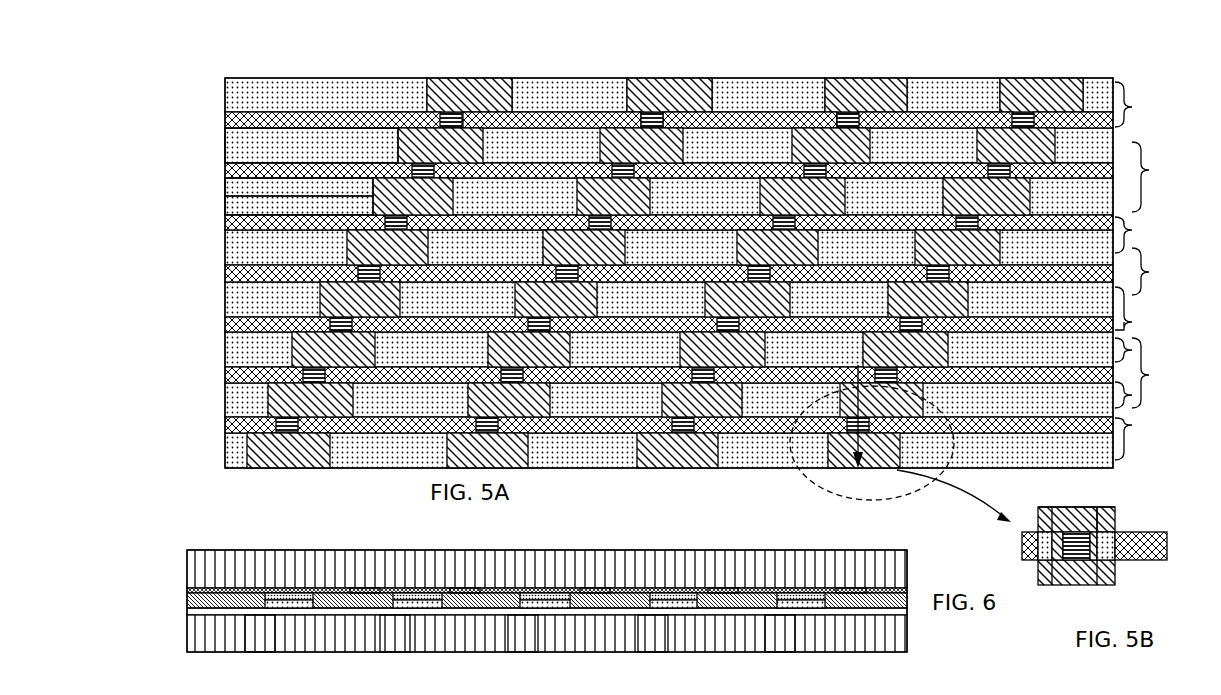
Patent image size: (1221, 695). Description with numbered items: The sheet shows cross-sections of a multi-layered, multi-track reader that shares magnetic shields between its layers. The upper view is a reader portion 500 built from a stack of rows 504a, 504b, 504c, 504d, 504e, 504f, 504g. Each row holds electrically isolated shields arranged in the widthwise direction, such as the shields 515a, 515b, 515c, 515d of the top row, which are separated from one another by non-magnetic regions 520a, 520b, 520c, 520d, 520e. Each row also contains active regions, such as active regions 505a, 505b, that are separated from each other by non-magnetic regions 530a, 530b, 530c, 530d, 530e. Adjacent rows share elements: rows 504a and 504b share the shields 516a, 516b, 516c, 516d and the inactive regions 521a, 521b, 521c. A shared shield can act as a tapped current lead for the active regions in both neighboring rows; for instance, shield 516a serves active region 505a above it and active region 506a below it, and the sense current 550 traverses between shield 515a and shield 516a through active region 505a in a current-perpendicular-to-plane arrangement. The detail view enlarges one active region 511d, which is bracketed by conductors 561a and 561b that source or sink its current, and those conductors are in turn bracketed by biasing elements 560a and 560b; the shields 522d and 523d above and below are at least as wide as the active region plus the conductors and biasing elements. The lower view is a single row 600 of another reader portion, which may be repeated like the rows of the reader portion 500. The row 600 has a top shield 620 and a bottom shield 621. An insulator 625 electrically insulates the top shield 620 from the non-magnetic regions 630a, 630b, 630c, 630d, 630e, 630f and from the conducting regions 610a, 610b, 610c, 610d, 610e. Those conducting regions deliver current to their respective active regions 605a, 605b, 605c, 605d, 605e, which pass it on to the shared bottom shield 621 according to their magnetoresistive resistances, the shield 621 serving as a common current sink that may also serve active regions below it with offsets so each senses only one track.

In FIG. 5A, the reader portion 500 is at (259, 68).
In FIG. 5A, the row 504a is at (1145, 104).
In FIG. 5A, the row 504b is at (1159, 177).
In FIG. 5A, the row 504c is at (1144, 235).
In FIG. 5A, the row 504d is at (1158, 271).
In FIG. 5A, the row 504e is at (1149, 310).
In FIG. 5A, the row 504f is at (1161, 373).
In FIG. 5A, the row 504g is at (1143, 439).
In FIG. 5A, the active region 505a is at (463, 110).
In FIG. 5A, the active region 505b is at (645, 112).
In FIG. 5A, the active region 506a is at (413, 167).
In FIG. 5B, the active region 511d is at (1078, 560).
In FIG. 5A, the shield 515a is at (436, 78).
In FIG. 5A, the shield 515b is at (652, 110).
In FIG. 5A, the shield 515c is at (883, 110).
In FIG. 5A, the shield 515d is at (1068, 110).
In FIG. 5A, the shared shield 516a is at (400, 145).
In FIG. 5A, the shared shield 516b is at (219, 195).
In FIG. 5A, the shared shield 516c is at (870, 137).
In FIG. 5A, the shared shield 516d is at (1012, 112).
In FIG. 5A, the non-magnetic region 520a is at (300, 78).
In FIG. 5A, the non-magnetic region 520b is at (596, 78).
In FIG. 5A, the non-magnetic region 520c is at (792, 79).
In FIG. 5A, the non-magnetic region 520d is at (948, 80).
In FIG. 5A, the non-magnetic region 520e is at (1092, 80).
In FIG. 5A, the inactive region 521a is at (226, 134).
In FIG. 5A, the inactive region 521b is at (226, 194).
In FIG. 5A, the inactive region 521c is at (377, 205).
In FIG. 5B, the shield 522d is at (1115, 518).
In FIG. 5B, the shield 523d is at (1115, 577).
In FIG. 5A, the non-magnetic region 530a is at (226, 121).
In FIG. 5A, the non-magnetic region 530b is at (530, 112).
In FIG. 5A, the non-magnetic region 530c is at (752, 112).
In FIG. 5A, the non-magnetic region 530d is at (887, 113).
In FIG. 5A, the non-magnetic region 530e is at (1063, 110).
In FIG. 5A, the sense current 550 is at (840, 433).
In FIG. 5B, the biasing element 560a is at (1046, 530).
In FIG. 5B, the biasing element 560b is at (1093, 572).
In FIG. 5B, the conductor 561a is at (1055, 525).
In FIG. 5B, the conductor 561b is at (1095, 523).
In FIG. 6, the row 600 is at (293, 536).
In FIG. 6, the active region 605a is at (287, 603).
In FIG. 6, the active region 605b is at (423, 610).
In FIG. 6, the active region 605c is at (547, 610).
In FIG. 6, the active region 605d is at (677, 610).
In FIG. 6, the active region 605e is at (805, 610).
In FIG. 6, the conducting region 610a is at (262, 615).
In FIG. 6, the conducting region 610b is at (397, 615).
In FIG. 6, the conducting region 610c is at (525, 615).
In FIG. 6, the conducting region 610d is at (653, 615).
In FIG. 6, the conducting region 610e is at (782, 615).
In FIG. 6, the top shield 620 is at (187, 571).
In FIG. 6, the bottom shield 621 is at (187, 640).
In FIG. 6, the insulator 625 is at (187, 591).
In FIG. 6, the non-magnetic region 630a is at (187, 616).
In FIG. 6, the non-magnetic region 630b is at (362, 590).
In FIG. 6, the non-magnetic region 630c is at (465, 590).
In FIG. 6, the non-magnetic region 630d is at (595, 590).
In FIG. 6, the non-magnetic region 630e is at (722, 590).
In FIG. 6, the non-magnetic region 630f is at (850, 590).